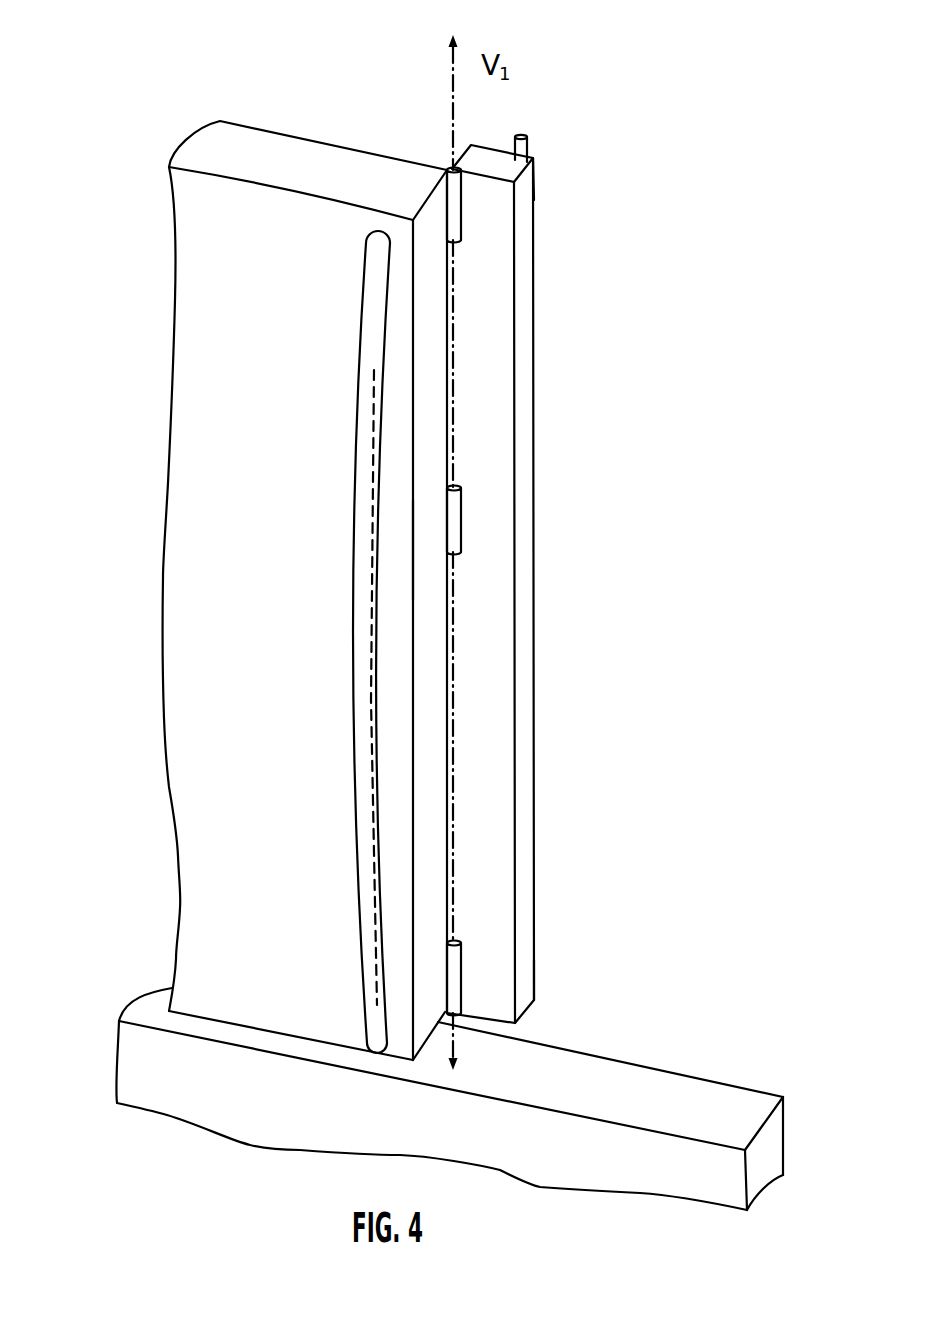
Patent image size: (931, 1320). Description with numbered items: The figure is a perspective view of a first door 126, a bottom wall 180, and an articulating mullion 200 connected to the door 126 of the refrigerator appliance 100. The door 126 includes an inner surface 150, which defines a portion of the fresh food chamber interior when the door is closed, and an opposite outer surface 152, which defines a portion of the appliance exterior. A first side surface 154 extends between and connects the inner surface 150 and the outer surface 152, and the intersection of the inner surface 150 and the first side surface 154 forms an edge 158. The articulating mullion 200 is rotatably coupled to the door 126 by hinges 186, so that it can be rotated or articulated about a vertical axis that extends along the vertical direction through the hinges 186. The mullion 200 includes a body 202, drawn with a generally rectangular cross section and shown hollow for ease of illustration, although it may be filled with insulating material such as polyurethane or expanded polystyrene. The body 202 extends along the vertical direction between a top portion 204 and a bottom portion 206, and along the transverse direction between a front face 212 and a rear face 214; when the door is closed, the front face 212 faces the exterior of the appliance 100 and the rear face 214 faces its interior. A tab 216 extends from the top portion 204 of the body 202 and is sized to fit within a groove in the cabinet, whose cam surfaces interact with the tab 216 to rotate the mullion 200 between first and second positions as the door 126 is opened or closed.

The refrigerator appliance 100 is at (270, 86).
The door 126 is at (274, 559).
The inner surface 150 is at (373, 146).
The outer surface 152 is at (205, 294).
The first side surface 154 is at (432, 400).
The edge 158 is at (448, 167).
The bottom wall 180 is at (232, 1115).
The hinges 186 is at (455, 217).
The articulating mullion 200 is at (538, 523).
The body 202 is at (498, 638).
The top portion 204 is at (556, 187).
The bottom portion 206 is at (557, 998).
The front face 212 is at (500, 742).
The rear face 214 is at (492, 148).
The tab 216 is at (527, 145).